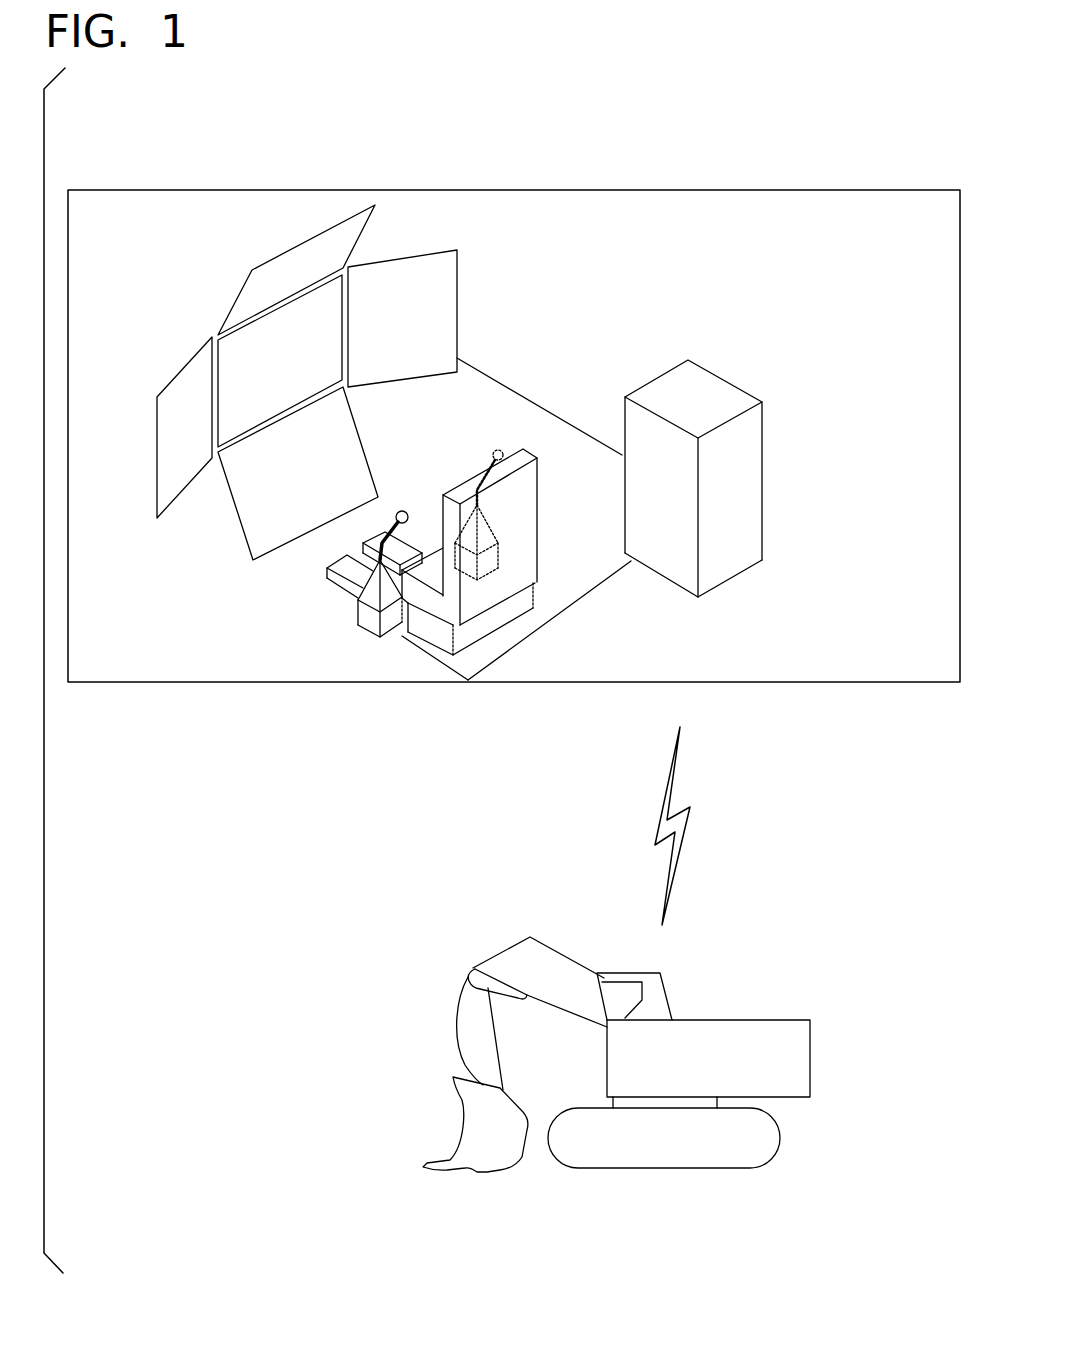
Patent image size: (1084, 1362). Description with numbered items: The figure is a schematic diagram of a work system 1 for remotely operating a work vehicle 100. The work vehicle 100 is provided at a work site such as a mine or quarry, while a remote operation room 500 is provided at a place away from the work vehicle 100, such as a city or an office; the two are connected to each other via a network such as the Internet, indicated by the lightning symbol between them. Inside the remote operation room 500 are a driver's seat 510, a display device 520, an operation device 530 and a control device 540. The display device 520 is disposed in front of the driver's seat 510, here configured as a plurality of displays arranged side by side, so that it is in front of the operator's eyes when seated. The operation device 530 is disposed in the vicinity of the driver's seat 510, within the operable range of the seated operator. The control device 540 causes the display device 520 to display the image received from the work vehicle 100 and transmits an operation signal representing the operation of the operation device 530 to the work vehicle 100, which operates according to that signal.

The work system 1 is at (858, 162).
The remote operation room 500 is at (512, 189).
The driver's seat 510 is at (539, 528).
The display device 520 is at (192, 303).
The operation device 530 is at (357, 613).
The control device 540 is at (763, 455).
The work vehicle 100 is at (767, 1020).